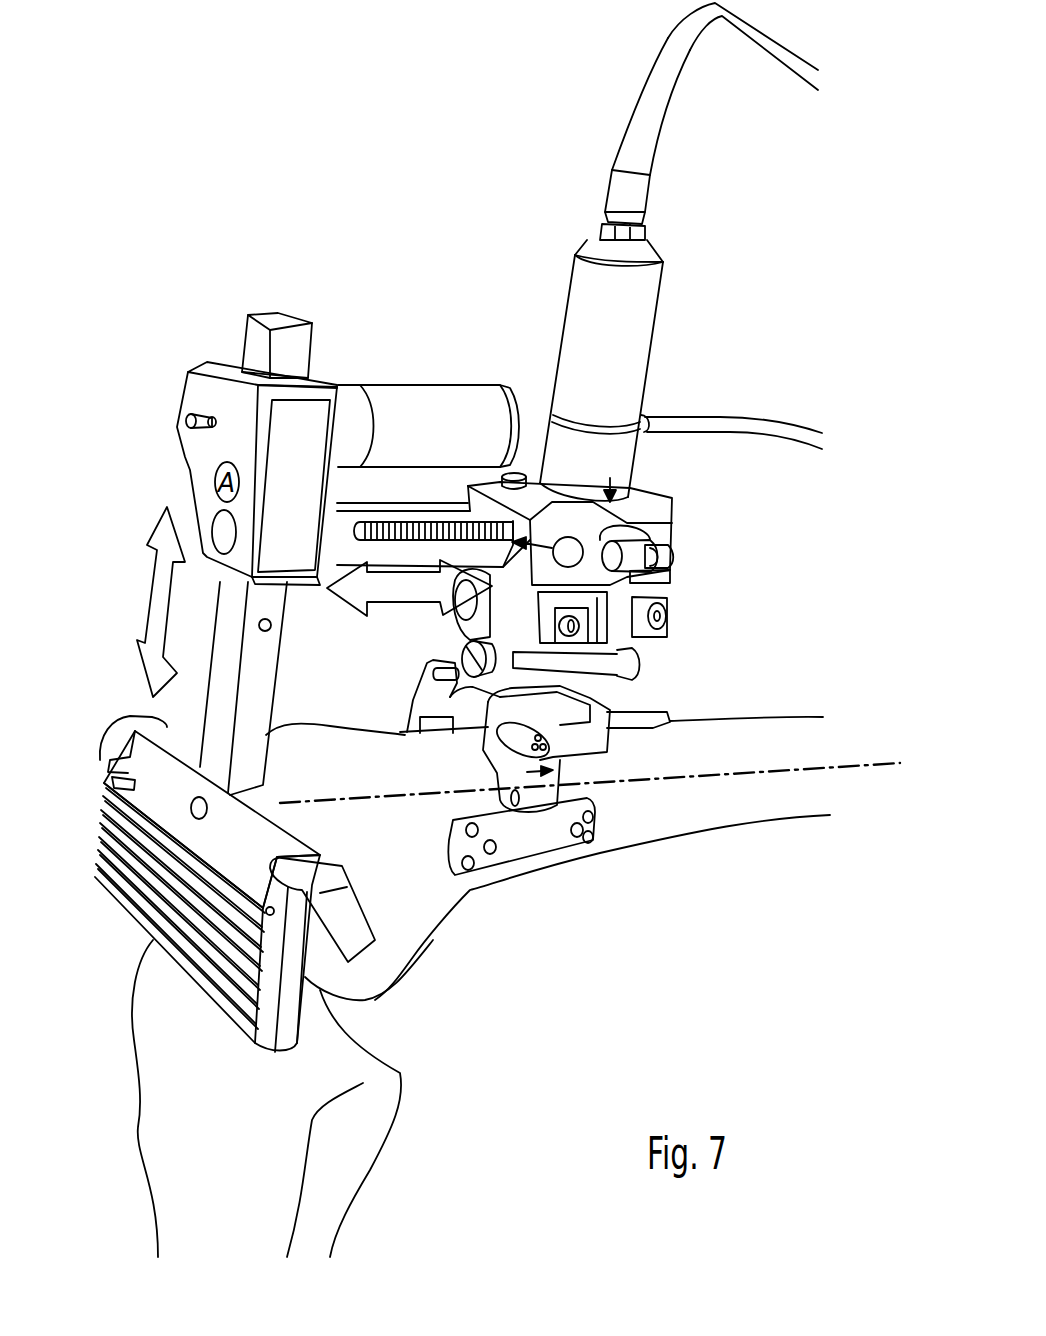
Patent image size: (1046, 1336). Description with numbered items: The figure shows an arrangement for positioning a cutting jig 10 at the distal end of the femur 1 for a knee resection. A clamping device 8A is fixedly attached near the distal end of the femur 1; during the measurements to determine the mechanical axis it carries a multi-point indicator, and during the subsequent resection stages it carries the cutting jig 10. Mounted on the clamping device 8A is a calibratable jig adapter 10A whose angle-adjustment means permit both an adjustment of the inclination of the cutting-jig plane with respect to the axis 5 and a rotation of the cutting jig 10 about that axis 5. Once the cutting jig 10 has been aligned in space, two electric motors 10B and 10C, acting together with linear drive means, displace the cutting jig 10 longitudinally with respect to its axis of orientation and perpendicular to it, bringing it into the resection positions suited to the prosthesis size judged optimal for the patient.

The femur 1 is at (620, 838).
The axis 5 is at (712, 780).
The clamping device 8A is at (505, 853).
The cutting jig 10 is at (100, 745).
The calibratable jig adapter 10A is at (692, 606).
The electric motor 10B is at (397, 400).
The electric motor 10C is at (635, 335).